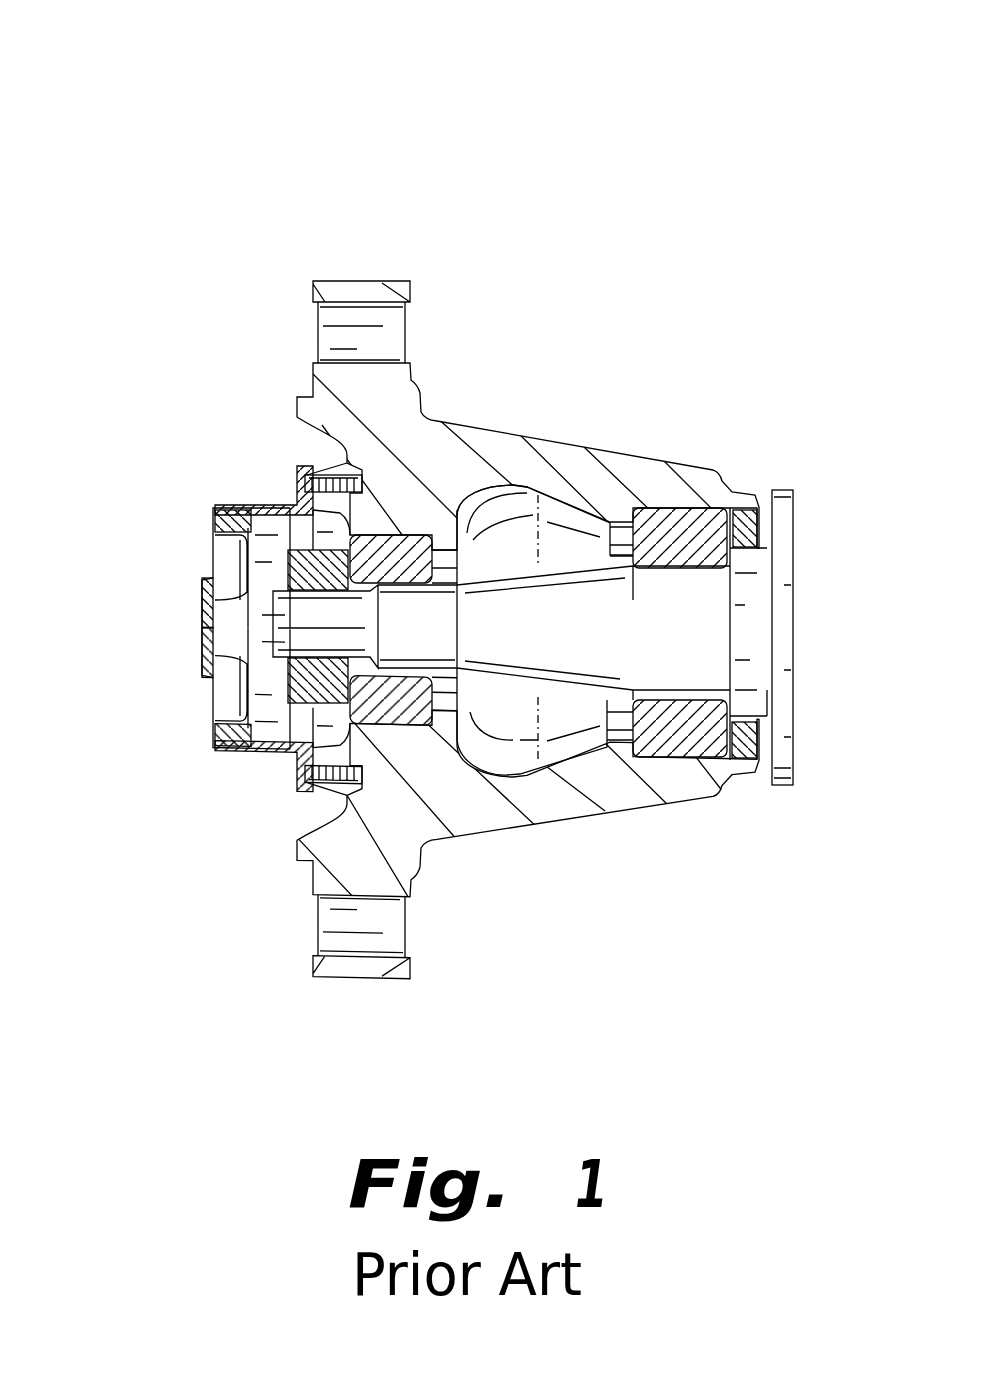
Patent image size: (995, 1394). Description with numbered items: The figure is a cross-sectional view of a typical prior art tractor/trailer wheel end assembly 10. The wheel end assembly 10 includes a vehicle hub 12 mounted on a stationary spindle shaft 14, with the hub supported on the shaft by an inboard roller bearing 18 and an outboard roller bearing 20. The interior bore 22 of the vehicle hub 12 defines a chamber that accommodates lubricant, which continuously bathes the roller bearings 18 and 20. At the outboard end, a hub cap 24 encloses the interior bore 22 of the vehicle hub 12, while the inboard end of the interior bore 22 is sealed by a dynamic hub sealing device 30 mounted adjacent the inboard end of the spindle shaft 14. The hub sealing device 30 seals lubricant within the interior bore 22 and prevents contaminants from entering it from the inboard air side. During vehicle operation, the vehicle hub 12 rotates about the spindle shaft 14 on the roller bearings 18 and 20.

The wheel end assembly 10 is at (184, 157).
The vehicle hub 12 is at (517, 433).
The spindle shaft 14 is at (540, 617).
The inboard roller bearing 18 is at (680, 527).
The outboard roller bearing 20 is at (393, 535).
The interior bore 22 is at (549, 760).
The hub cap 24 is at (237, 757).
The hub sealing device 30 is at (777, 523).